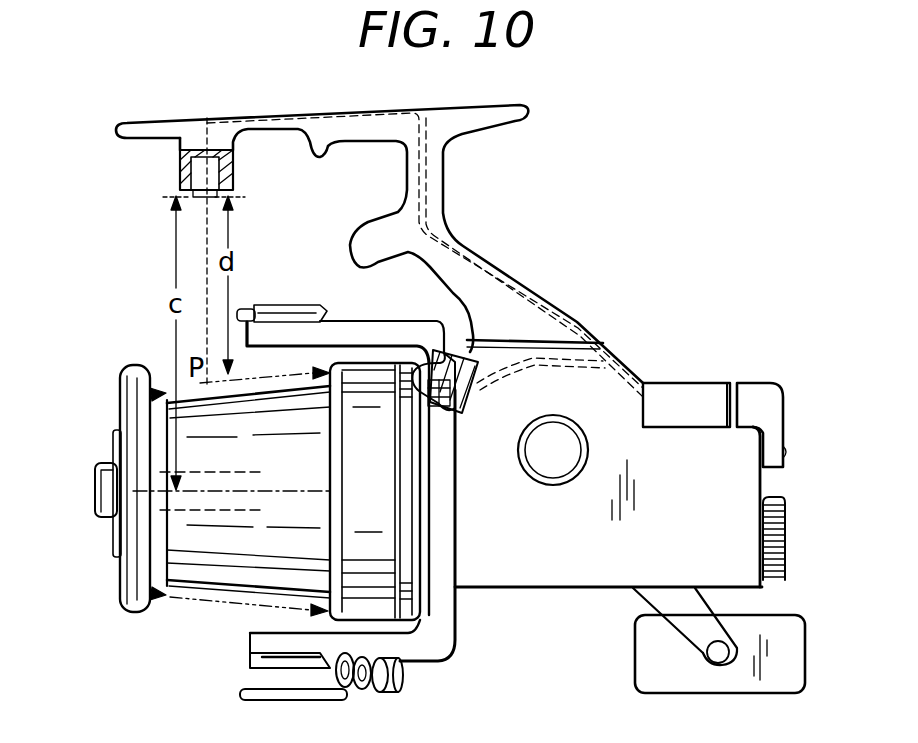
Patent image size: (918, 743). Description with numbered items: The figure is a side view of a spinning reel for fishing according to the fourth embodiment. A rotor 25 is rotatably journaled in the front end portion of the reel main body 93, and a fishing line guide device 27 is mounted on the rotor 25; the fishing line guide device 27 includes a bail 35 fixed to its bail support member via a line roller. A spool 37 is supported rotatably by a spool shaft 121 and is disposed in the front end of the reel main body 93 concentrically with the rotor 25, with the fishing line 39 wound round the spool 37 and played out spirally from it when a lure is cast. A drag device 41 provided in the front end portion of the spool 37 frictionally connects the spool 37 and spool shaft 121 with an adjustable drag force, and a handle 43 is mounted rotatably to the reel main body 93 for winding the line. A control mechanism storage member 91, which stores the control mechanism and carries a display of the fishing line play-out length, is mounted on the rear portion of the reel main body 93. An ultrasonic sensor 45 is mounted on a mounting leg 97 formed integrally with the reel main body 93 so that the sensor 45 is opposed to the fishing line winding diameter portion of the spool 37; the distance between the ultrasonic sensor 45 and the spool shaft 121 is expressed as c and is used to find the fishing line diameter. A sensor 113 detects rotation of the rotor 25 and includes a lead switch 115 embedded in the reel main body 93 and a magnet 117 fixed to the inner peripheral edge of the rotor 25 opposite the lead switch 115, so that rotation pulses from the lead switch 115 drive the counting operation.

The rotor 25 is at (447, 613).
The fishing line guide device 27 is at (232, 660).
The bail 35 is at (238, 685).
The spool 37 is at (173, 553).
The fishing line 39 is at (162, 405).
The drag device 41 is at (95, 505).
The handle 43 is at (700, 610).
The ultrasonic sensor 45 is at (198, 150).
The control mechanism storage member 91 is at (717, 388).
The reel main body 93 is at (610, 356).
The mounting leg 97 is at (437, 207).
The sensor 113 is at (462, 346).
The lead switch 115 is at (435, 417).
The magnet 117 is at (436, 347).
The spool shaft 121 is at (230, 516).